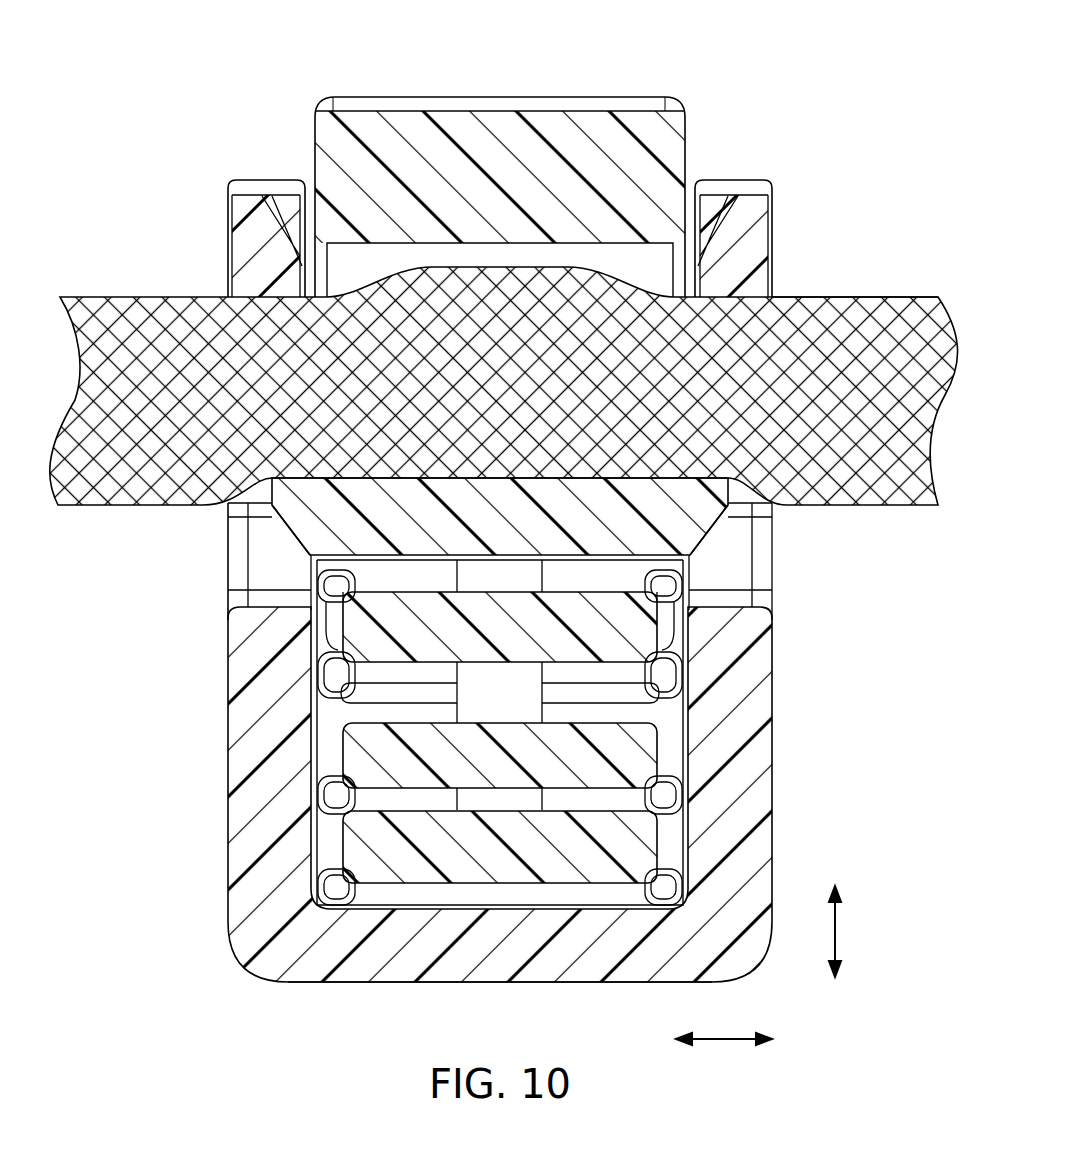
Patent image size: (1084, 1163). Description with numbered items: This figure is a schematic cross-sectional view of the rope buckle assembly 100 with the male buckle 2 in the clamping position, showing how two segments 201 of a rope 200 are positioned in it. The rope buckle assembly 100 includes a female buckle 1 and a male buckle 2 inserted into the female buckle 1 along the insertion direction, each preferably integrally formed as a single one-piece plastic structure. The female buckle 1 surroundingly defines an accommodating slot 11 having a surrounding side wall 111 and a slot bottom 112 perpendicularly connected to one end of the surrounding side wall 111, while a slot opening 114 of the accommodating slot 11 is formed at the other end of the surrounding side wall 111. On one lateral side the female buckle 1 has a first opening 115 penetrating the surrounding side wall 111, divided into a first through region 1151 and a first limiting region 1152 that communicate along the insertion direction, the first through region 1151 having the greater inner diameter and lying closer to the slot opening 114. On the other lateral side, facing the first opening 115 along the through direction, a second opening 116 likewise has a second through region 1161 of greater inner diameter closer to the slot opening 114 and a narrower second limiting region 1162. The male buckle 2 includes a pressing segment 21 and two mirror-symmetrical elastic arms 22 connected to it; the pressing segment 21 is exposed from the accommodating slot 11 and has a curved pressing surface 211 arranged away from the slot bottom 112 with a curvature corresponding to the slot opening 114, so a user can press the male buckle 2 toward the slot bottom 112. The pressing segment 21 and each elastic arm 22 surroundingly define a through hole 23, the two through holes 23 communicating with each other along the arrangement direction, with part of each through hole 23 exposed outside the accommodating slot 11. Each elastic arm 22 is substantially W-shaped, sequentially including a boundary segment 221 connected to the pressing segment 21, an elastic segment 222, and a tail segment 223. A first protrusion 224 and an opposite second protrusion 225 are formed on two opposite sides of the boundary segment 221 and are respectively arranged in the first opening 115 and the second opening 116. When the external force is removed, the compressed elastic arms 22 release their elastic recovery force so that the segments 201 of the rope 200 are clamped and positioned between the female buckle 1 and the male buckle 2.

The rope buckle assembly 100 is at (710, 64).
The female buckle 1 is at (242, 946).
The accommodating slot 11 is at (314, 733).
The surrounding side wall 111 is at (224, 829).
The slot bottom 112 is at (386, 988).
The slot opening 114 is at (307, 182).
The first opening 115 is at (785, 660).
The first through region 1151 is at (772, 293).
The first limiting region 1152 is at (764, 576).
The second opening 116 is at (62, 660).
The second through region 1161 is at (228, 293).
The second limiting region 1162 is at (236, 576).
The male buckle 2 is at (311, 121).
The pressing segment 21 is at (688, 158).
The pressing surface 211 is at (441, 104).
The elastic arm 22 is at (346, 762).
The boundary segment 221 is at (522, 518).
The elastic segment 222 is at (638, 632).
The tail segment 223 is at (640, 832).
The first protrusion 224 is at (700, 517).
The second protrusion 225 is at (302, 527).
The through hole 23 is at (580, 256).
The rope 200 is at (85, 298).
The segment 201 is at (775, 292).